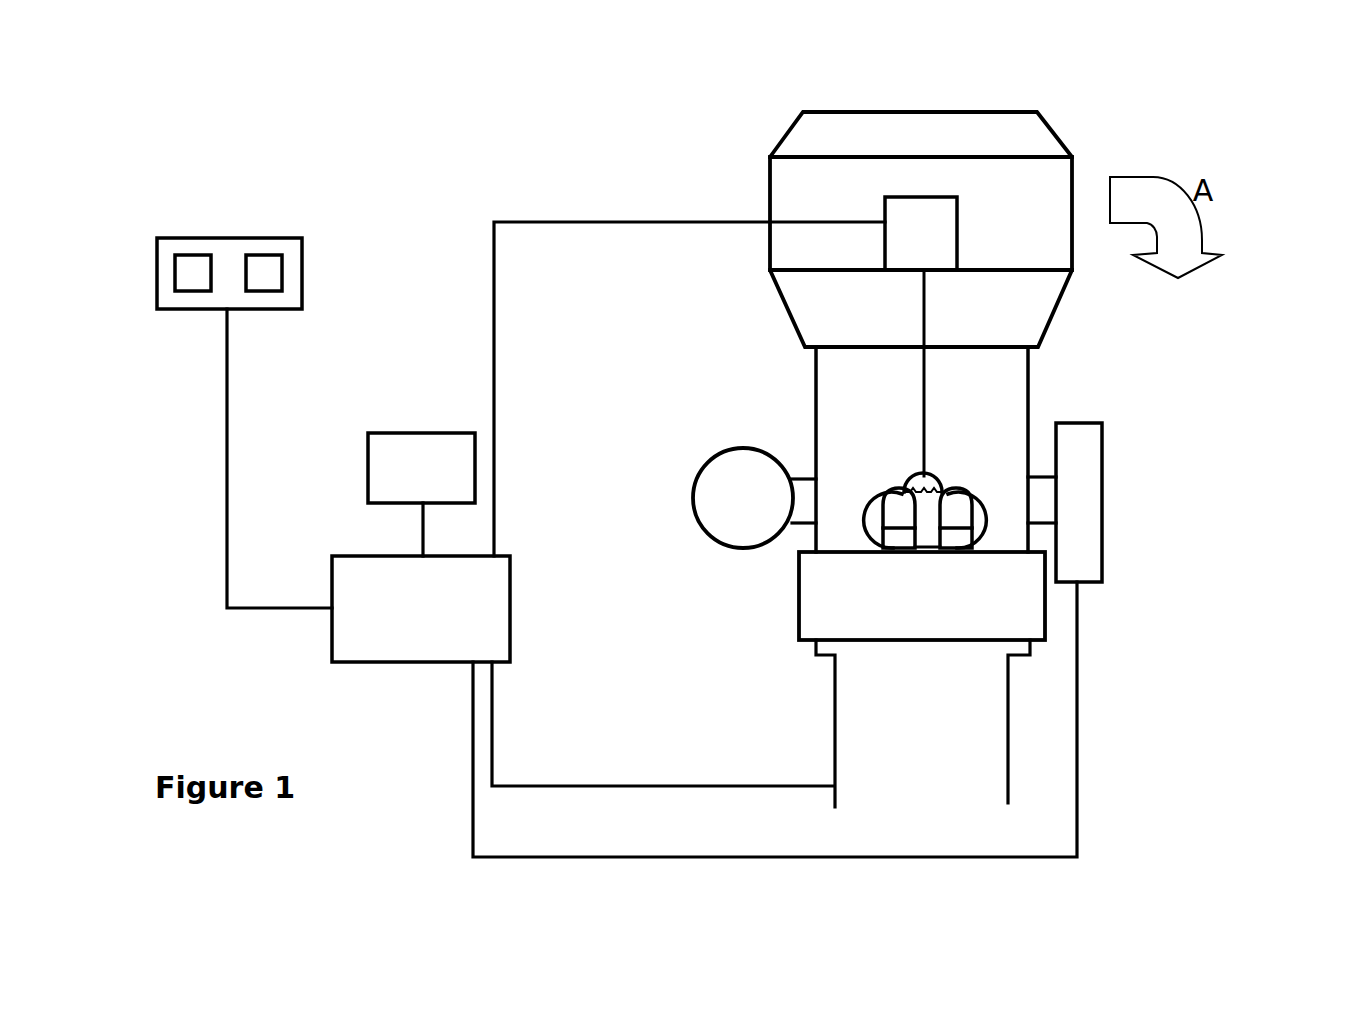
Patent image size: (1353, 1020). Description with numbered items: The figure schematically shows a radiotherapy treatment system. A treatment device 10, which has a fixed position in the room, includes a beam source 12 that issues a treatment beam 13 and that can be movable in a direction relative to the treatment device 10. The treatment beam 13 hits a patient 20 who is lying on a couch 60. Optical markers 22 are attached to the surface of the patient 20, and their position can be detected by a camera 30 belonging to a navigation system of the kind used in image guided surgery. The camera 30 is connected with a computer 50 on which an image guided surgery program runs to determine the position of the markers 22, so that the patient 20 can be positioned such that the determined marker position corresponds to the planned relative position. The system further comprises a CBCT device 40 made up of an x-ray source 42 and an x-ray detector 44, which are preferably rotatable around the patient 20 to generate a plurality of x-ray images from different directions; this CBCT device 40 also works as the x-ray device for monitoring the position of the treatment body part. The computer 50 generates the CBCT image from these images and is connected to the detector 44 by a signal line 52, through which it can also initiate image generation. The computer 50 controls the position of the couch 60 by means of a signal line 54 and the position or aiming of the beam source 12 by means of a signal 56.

The treatment device 10 is at (798, 215).
The beam source 12 is at (940, 222).
The treatment beam 13 is at (925, 397).
The patient 20 is at (1021, 528).
The optical markers 22 is at (937, 495).
The camera 30 is at (302, 290).
The CBCT device 40 is at (1168, 557).
The x-ray source 42 is at (718, 455).
The x-ray detector 44 is at (1103, 499).
The computer 50 is at (490, 627).
The signal line 52 is at (542, 857).
The signal line 54 is at (543, 786).
The signal 56 is at (568, 222).
The couch 60 is at (798, 597).